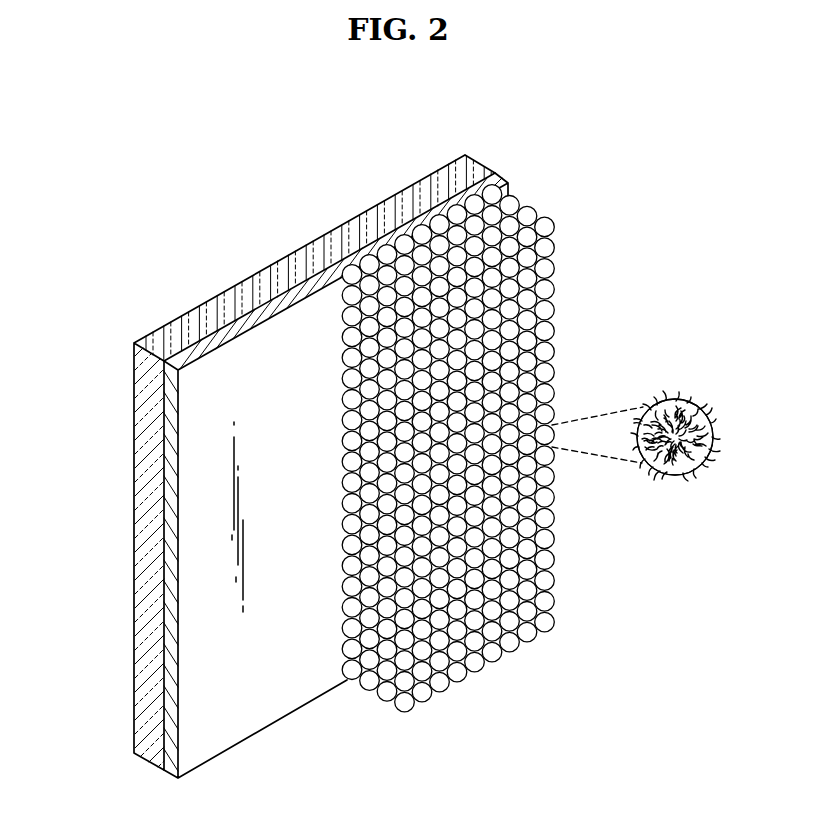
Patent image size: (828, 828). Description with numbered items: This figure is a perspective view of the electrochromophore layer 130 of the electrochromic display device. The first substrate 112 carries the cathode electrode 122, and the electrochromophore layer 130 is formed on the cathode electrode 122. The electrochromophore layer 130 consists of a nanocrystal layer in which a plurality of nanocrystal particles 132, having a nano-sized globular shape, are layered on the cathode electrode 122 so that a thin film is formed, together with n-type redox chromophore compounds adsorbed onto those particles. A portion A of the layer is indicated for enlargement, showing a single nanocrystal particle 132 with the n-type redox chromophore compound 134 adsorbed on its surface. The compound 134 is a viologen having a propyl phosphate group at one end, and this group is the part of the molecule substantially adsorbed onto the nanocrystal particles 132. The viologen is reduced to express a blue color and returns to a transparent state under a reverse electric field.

The first substrate 112 is at (150, 574).
The cathode electrode 122 is at (176, 664).
The electrochromophore layer 130 is at (557, 241).
The nanocrystal particles 132 is at (690, 478).
The n-type redox chromophore compound 134 is at (680, 396).
The portion A is at (727, 430).